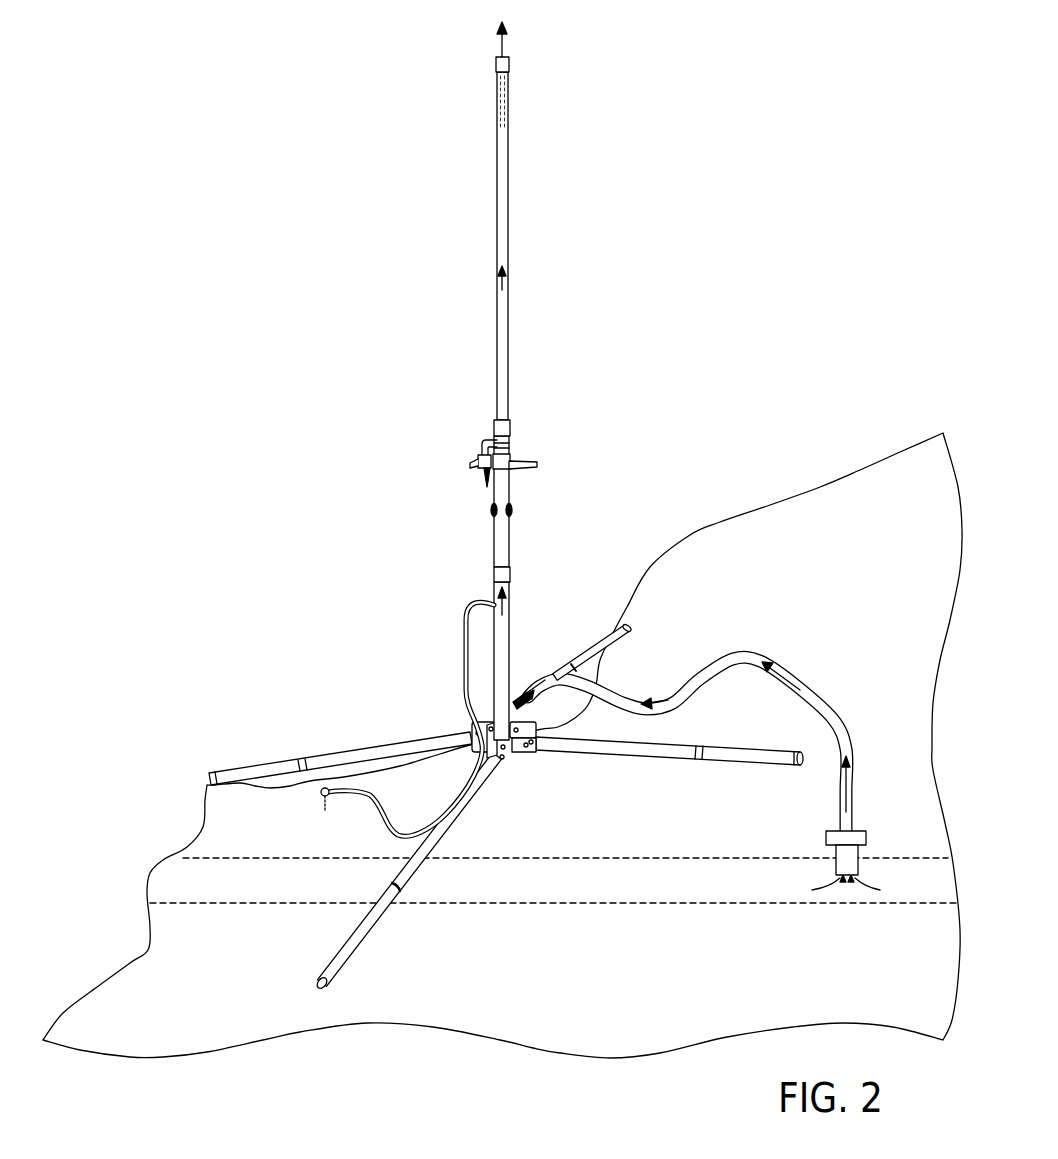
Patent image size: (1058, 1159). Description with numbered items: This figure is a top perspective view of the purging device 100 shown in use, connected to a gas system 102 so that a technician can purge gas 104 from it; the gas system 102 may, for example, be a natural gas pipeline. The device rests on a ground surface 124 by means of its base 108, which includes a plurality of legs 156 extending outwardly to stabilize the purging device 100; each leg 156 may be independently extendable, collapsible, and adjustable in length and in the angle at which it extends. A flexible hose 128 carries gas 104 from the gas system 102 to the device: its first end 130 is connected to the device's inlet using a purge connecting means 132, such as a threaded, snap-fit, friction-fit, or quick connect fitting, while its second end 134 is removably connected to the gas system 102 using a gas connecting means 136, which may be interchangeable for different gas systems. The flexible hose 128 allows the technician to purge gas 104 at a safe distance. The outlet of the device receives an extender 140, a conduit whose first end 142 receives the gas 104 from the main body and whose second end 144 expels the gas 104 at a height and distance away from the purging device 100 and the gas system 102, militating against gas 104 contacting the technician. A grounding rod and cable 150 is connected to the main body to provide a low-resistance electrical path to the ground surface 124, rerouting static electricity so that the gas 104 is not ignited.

The purging device 100 is at (642, 422).
The gas system 102 is at (636, 860).
The gas 104 is at (508, 47).
The base 108 is at (512, 775).
The ground surface 124 is at (750, 497).
The flexible hose 128 is at (793, 676).
The first end of the flexible hose 130 is at (540, 680).
The purge connecting means 132 is at (526, 692).
The second end of the flexible hose 134 is at (839, 812).
The gas connecting means 136 is at (836, 860).
The extender 140 is at (497, 246).
The first end of the extender 142 is at (508, 410).
The second end of the extender 144 is at (497, 78).
The grounding rod and cable 150 is at (357, 788).
The legs 156 is at (607, 762).